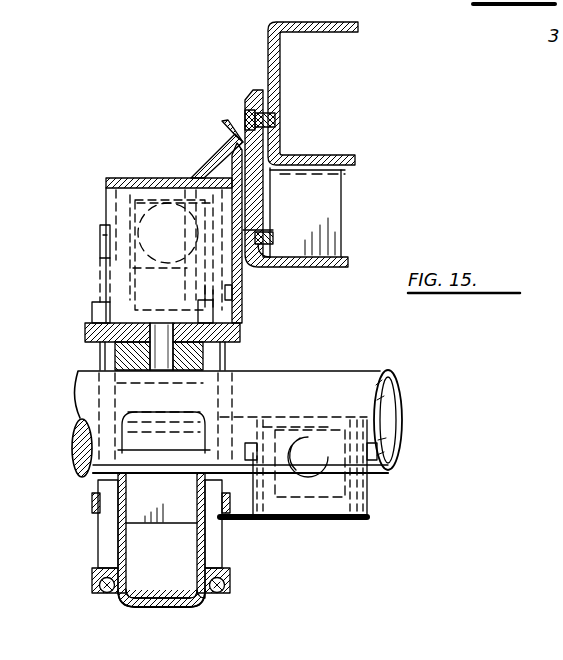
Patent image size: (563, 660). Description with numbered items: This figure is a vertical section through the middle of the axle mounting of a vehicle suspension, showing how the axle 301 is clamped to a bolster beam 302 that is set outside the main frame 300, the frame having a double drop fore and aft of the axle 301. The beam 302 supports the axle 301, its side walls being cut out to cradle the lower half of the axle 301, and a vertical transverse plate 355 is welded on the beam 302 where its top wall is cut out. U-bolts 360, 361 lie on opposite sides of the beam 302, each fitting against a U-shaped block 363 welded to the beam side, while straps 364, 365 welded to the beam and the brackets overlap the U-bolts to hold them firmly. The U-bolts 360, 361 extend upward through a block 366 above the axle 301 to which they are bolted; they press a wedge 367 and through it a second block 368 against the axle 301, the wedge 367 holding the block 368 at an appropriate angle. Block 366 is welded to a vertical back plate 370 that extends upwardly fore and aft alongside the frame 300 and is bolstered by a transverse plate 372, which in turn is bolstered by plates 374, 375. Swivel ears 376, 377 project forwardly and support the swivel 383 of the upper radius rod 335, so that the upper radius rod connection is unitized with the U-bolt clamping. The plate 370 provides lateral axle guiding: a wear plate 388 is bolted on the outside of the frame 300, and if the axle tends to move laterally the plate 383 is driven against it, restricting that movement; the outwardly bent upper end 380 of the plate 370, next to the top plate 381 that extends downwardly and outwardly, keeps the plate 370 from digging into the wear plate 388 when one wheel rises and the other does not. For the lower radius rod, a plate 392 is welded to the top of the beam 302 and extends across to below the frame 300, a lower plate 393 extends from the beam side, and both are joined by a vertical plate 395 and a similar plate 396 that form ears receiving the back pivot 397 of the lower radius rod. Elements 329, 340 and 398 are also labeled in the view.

The main frame 300 is at (277, 75).
The axle 301 is at (340, 371).
The bolster beam 302 is at (158, 604).
The support member 329 is at (540, 0).
The upper radius rod 335 is at (147, 218).
The arm 340 is at (312, 525).
The vertical transverse plate 355 is at (168, 523).
The U-bolt 360 is at (106, 594).
The U-bolt 361 is at (221, 593).
The U-shaped block 363 is at (100, 549).
The strap 364 is at (100, 584).
The strap 365 is at (93, 503).
The block 366 is at (243, 338).
The wedge 367 is at (118, 346).
The second block 368 is at (112, 373).
The vertical plate 370 is at (243, 296).
The transverse plate 372 is at (187, 178).
The plate 374 is at (108, 193).
The plate 375 is at (182, 278).
The swivel ear 376 is at (108, 271).
The swivel ear 377 is at (250, 281).
The bent-out upper end 380 is at (236, 128).
The top plate 381 is at (198, 175).
The swivel 383 is at (100, 239).
The wear plate 388 is at (266, 143).
The plate 392 is at (222, 392).
The lower plate 393 is at (340, 522).
The vertical plate 395 is at (372, 501).
The plate 396 is at (272, 425).
The back pivot 397 is at (384, 453).
The link 398 is at (300, 523).